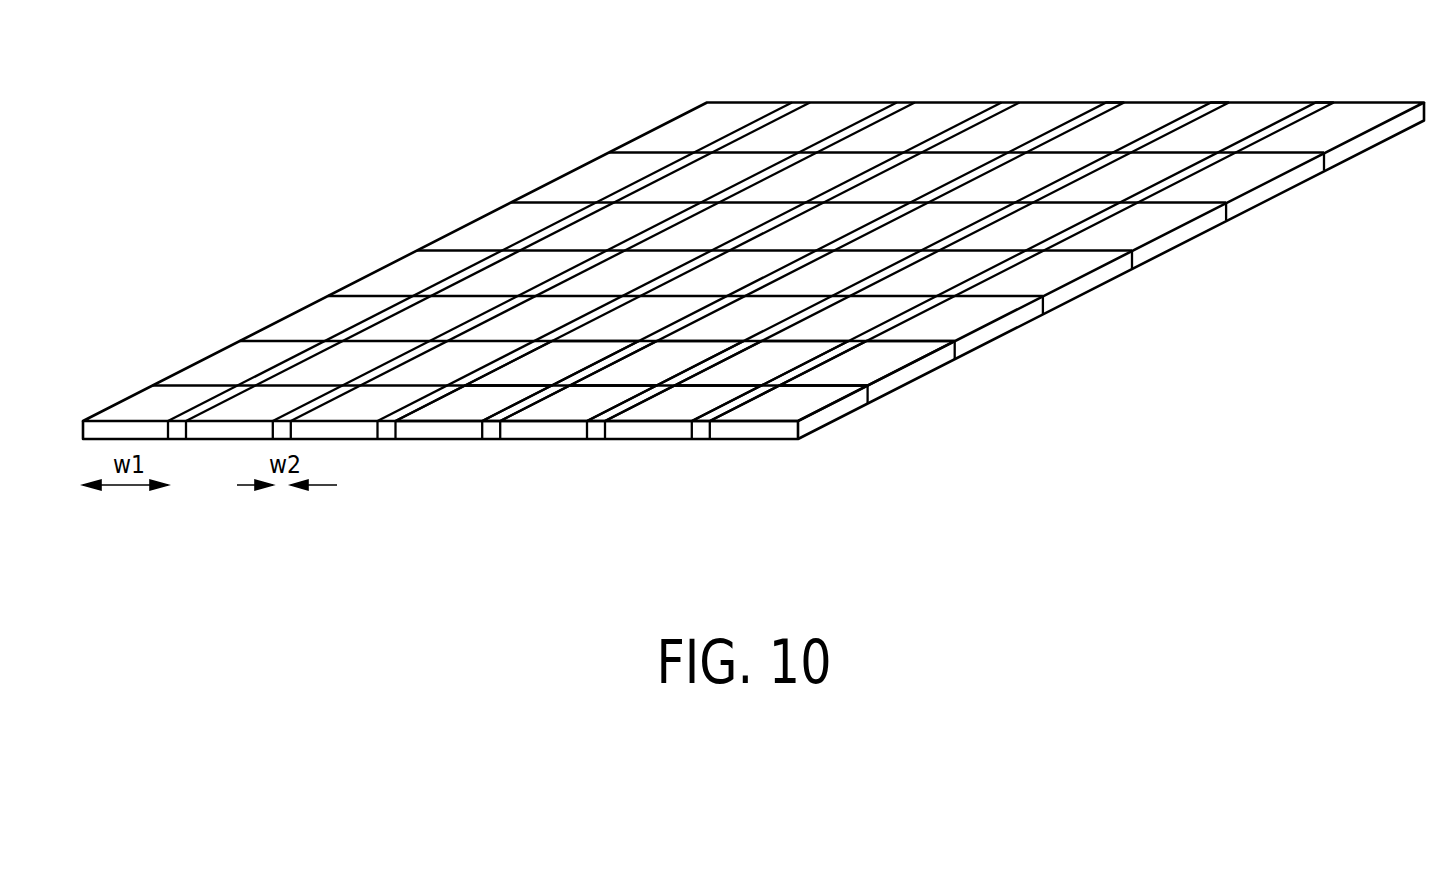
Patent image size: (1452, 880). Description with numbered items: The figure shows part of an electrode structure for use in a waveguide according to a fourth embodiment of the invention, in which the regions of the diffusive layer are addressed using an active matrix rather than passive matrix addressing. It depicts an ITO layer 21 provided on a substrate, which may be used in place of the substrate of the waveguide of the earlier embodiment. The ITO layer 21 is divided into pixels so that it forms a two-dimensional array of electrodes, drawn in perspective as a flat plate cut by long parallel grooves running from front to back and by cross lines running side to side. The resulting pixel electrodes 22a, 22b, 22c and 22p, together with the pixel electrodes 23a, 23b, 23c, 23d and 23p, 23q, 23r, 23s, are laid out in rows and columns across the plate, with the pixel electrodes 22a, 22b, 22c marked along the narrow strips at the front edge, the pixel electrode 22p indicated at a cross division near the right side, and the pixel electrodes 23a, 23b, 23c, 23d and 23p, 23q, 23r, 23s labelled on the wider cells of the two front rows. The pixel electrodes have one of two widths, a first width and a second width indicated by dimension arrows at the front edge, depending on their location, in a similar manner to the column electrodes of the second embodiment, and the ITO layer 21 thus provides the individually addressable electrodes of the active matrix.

The ITO layer 21 is at (833, 102).
The pixel electrode 22a is at (701, 440).
The pixel electrode 22b is at (596, 440).
The pixel electrode 22c is at (491, 440).
The pixel electrode 22p is at (817, 363).
The pixel electrode 23a is at (789, 404).
The pixel electrode 23b is at (683, 404).
The pixel electrode 23c is at (578, 404).
The cell element 23d is at (474, 404).
The pixel electrode 23p is at (866, 363).
The pixel electrode 23q is at (762, 363).
The pixel electrode 23r is at (657, 363).
The pixel electrode 23s is at (552, 363).